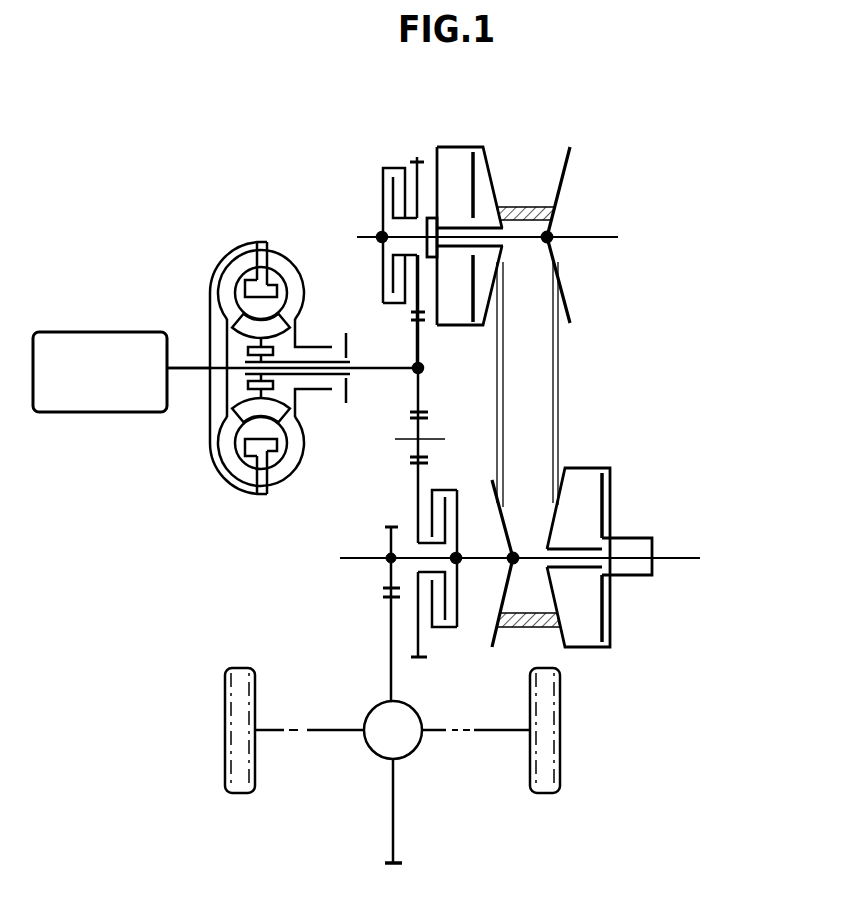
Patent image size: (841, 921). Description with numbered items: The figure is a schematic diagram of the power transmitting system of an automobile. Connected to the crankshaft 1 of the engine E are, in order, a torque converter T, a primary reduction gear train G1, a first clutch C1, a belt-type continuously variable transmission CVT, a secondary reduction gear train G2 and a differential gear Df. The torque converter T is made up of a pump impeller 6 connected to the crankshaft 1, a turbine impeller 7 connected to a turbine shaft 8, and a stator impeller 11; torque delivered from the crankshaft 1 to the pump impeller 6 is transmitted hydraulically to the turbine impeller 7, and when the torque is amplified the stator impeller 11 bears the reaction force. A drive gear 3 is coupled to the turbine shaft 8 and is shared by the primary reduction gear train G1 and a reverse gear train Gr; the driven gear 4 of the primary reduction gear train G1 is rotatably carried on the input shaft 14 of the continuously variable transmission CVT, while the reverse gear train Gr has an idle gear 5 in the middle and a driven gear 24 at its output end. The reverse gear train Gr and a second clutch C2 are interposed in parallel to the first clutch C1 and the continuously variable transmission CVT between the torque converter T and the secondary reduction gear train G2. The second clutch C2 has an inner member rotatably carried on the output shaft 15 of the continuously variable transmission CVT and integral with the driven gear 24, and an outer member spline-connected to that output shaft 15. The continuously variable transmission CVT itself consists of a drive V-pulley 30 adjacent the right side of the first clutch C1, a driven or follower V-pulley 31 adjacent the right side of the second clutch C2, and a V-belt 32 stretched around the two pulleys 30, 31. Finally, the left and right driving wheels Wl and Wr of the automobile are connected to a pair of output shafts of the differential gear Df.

The engine E is at (106, 391).
The crankshaft 1 is at (184, 367).
The torque converter T is at (259, 236).
The pump impeller 6 is at (294, 276).
The turbine impeller 7 is at (228, 278).
The stator impeller 11 is at (282, 331).
The turbine shaft 8 is at (372, 364).
The drive gear 3 is at (421, 347).
The driven gear 4 is at (419, 160).
The idle gear 5 is at (412, 425).
The driven gear 24 is at (416, 484).
The primary reduction gear train G1 is at (409, 156).
The secondary reduction gear train G2 is at (386, 550).
The reverse gear train Gr is at (425, 660).
The first clutch C1 is at (381, 186).
The second clutch C2 is at (456, 489).
The belt-type continuously variable transmission CVT is at (539, 366).
The drive V-pulley 30 is at (565, 180).
The driven V-pulley 31 is at (588, 467).
The V-belt 32 is at (560, 385).
The input shaft 14 is at (602, 239).
The output shaft 15 is at (677, 556).
The differential gear Df is at (405, 752).
The left driving wheel Wl is at (240, 795).
The right driving wheel Wr is at (548, 795).